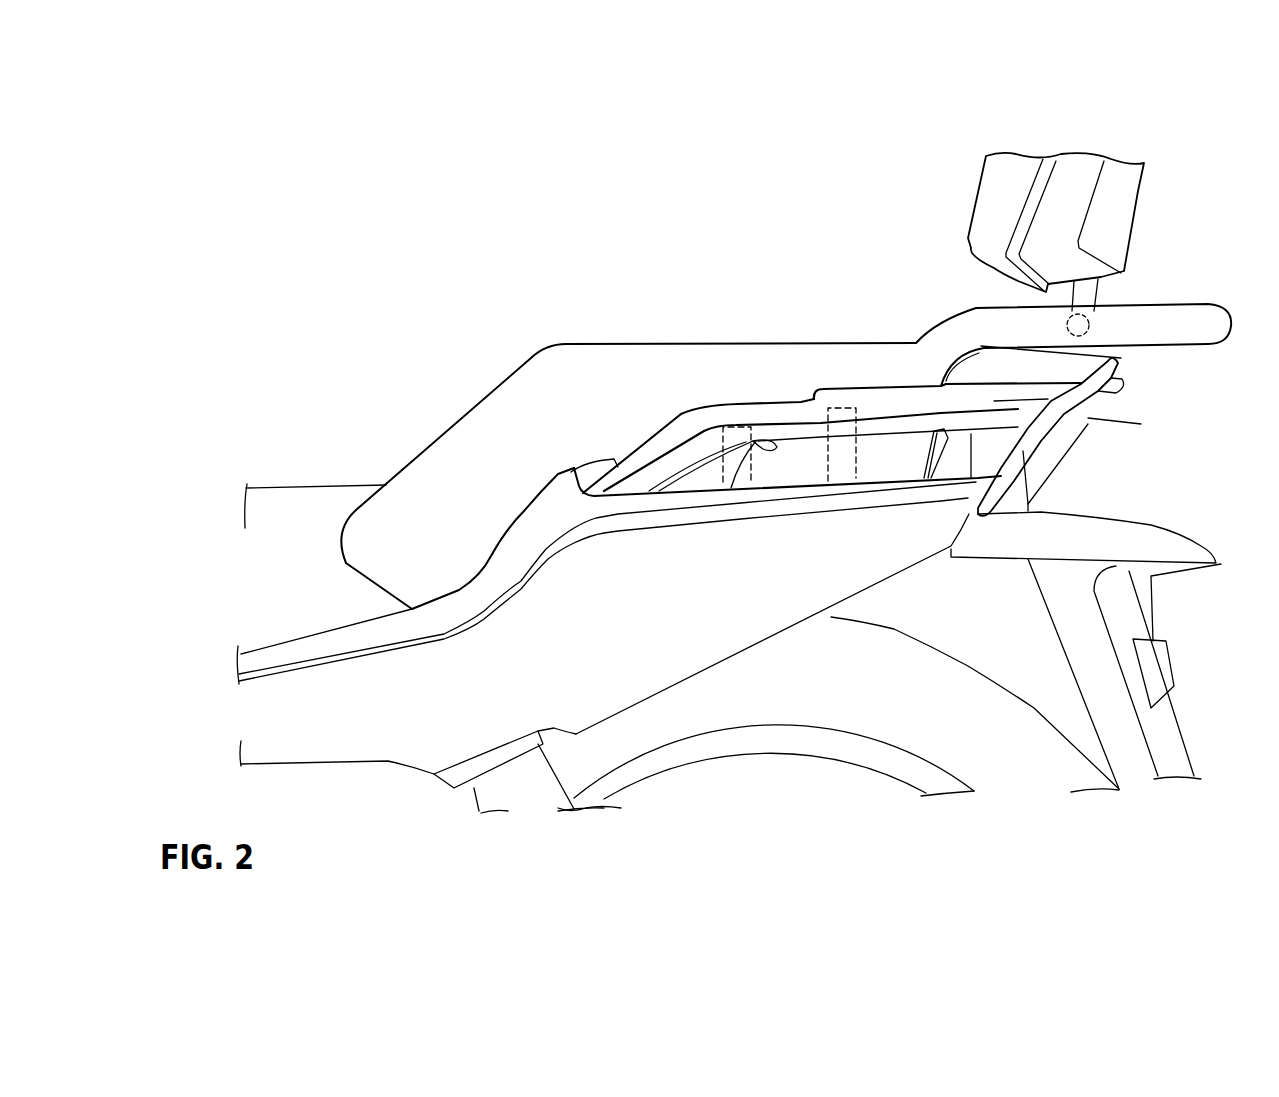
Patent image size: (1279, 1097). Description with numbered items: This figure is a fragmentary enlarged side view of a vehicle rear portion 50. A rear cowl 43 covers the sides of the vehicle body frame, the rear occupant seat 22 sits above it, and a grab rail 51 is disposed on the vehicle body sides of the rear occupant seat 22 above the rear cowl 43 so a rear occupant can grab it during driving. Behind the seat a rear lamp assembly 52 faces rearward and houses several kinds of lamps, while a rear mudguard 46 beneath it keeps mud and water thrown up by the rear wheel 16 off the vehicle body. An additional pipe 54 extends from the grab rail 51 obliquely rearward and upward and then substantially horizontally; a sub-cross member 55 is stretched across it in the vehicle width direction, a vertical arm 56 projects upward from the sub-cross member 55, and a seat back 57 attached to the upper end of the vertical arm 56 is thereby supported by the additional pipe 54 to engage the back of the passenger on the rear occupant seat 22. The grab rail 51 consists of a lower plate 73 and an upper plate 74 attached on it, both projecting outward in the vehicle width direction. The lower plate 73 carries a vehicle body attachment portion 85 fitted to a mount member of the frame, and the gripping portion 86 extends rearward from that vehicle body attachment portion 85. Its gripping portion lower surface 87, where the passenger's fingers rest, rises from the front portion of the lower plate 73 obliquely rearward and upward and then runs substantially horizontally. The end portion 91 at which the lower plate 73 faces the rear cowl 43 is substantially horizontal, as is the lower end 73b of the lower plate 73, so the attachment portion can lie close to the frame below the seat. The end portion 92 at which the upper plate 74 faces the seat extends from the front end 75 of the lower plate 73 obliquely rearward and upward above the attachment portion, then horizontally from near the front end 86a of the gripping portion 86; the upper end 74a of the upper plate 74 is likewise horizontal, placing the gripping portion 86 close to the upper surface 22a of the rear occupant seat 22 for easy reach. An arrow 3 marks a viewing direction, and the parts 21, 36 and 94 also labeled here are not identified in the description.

The section view indicator 3 is at (833, 228).
The rear wheel 16 is at (967, 700).
The vehicle body frame 21 is at (287, 507).
The rear occupant seat 22 is at (671, 424).
The upper surface of the rear occupant seat 22a is at (677, 340).
The bracket 36 is at (490, 795).
The rear cowl 43 is at (343, 720).
The rear mudguard 46 is at (1090, 540).
The vehicle rear portion 50 is at (671, 415).
The grab rail 51 is at (992, 369).
The rear lamp assembly 52 is at (1120, 397).
The additional pipe 54 is at (968, 322).
The sub-cross member 55 is at (1088, 323).
The vertical arm 56 is at (1087, 292).
The seat back 57 is at (1127, 180).
The lower plate 73 is at (977, 442).
The lower end of the lower plate 73b is at (830, 485).
The upper plate 74 is at (1047, 398).
The upper end of the upper plate 74a is at (814, 437).
The front end of the lower plate 75 is at (615, 488).
The vehicle body attachment portion 85 is at (733, 480).
The gripping portion 86 is at (828, 390).
The front end of the gripping portion 86a is at (749, 482).
The gripping portion lower surface 87 is at (753, 422).
The end portion of the lower plate facing the rear cowl 91 is at (793, 485).
The end portion of the upper plate facing the rear occupant seat 92 is at (725, 400).
The brace 94 is at (1120, 383).